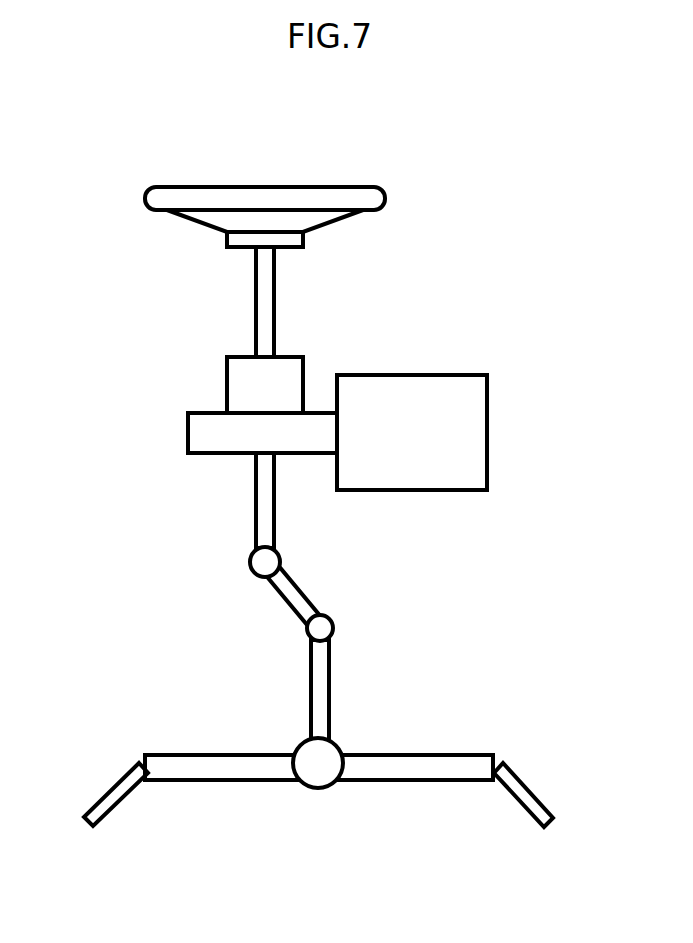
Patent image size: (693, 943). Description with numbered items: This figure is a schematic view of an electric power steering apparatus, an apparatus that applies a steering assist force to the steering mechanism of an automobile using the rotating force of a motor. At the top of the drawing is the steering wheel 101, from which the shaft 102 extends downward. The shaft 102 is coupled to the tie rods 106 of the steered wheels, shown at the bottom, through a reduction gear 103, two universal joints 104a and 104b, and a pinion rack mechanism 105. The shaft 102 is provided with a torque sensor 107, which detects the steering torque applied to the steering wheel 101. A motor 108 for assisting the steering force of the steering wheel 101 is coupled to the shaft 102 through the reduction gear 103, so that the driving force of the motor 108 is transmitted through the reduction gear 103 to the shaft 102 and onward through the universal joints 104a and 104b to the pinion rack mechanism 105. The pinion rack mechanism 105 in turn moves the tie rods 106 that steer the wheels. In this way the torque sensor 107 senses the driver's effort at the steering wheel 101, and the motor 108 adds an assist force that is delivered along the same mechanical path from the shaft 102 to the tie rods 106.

The steering wheel 101 is at (386, 193).
The shaft 102 is at (275, 305).
The reduction gear 103 is at (188, 437).
The universal joint 104a is at (250, 568).
The universal joint 104b is at (307, 632).
The pinion rack mechanism 105 is at (338, 742).
The tie rods 106 is at (530, 785).
The torque sensor 107 is at (227, 388).
The motor 108 is at (487, 425).